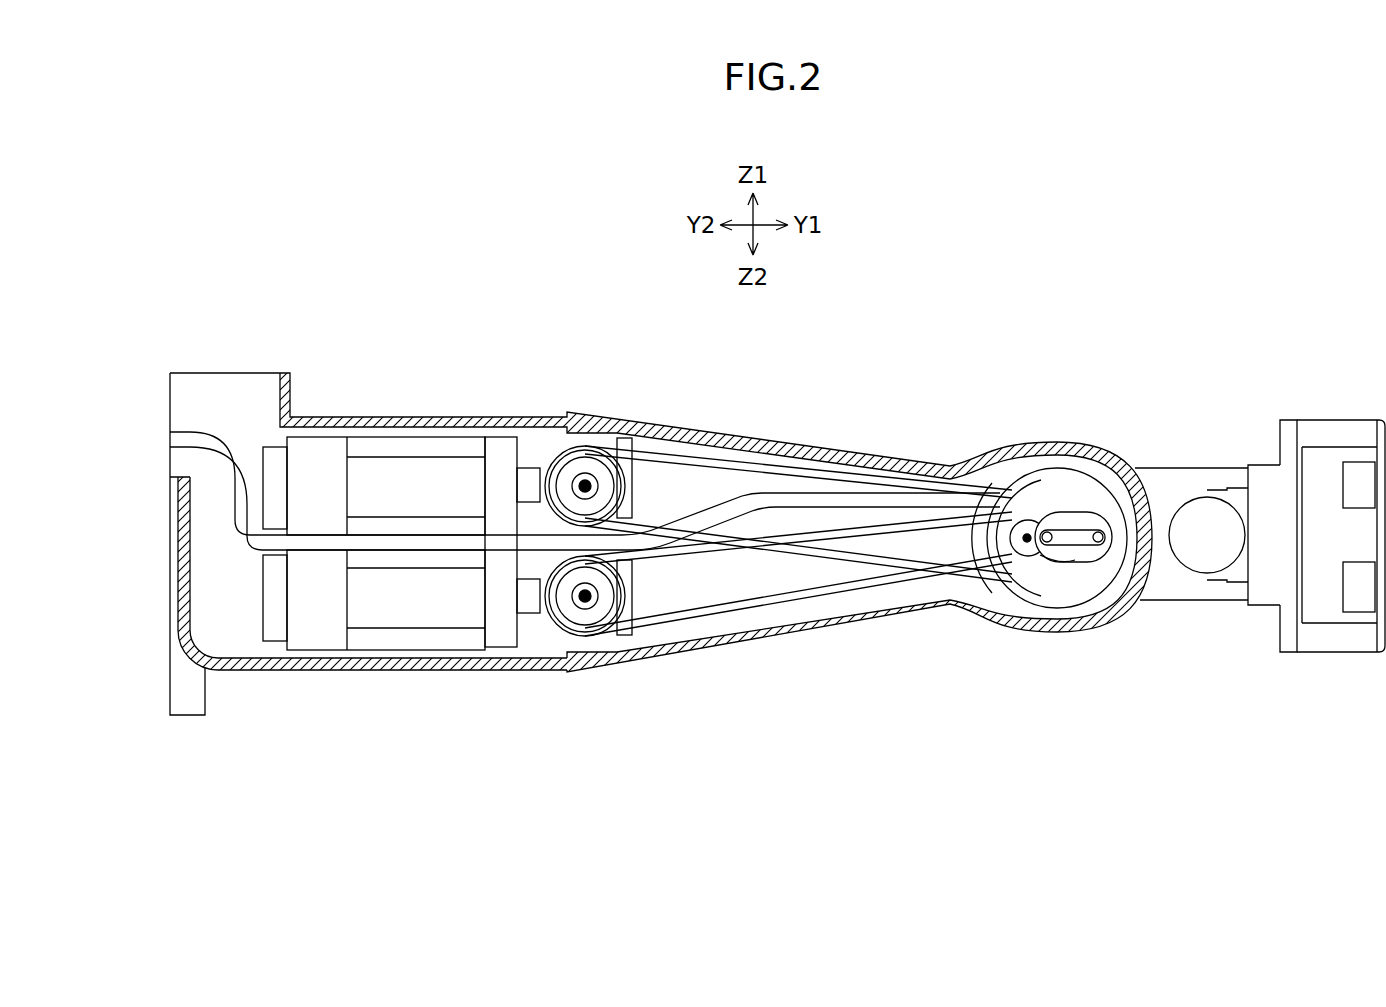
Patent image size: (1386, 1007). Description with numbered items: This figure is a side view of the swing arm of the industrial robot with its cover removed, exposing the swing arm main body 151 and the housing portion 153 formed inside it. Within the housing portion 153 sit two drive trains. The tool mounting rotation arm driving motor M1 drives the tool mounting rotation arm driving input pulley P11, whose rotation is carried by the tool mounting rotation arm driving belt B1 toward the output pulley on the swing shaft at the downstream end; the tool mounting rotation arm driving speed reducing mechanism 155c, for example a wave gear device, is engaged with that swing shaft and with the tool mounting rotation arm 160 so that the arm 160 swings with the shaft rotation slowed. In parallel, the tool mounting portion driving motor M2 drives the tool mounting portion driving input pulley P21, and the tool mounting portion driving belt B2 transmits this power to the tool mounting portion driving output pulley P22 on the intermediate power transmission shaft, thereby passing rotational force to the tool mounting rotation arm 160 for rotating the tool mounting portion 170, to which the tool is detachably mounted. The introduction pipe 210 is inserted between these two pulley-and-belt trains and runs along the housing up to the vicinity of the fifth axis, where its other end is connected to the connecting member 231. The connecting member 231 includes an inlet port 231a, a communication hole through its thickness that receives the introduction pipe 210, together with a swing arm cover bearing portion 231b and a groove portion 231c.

The swing arm main body 151 is at (355, 416).
The housing portion 153 is at (250, 638).
The tool mounting rotation arm driving motor M1 is at (425, 465).
The tool mounting portion driving motor M2 is at (425, 616).
The tool mounting rotation arm driving input pulley P11 is at (585, 470).
The tool mounting portion driving input pulley P21 is at (583, 612).
The tool mounting portion driving output pulley P22 is at (1030, 520).
The tool mounting rotation arm driving belt B1 is at (700, 462).
The tool mounting portion driving belt B2 is at (702, 620).
The introduction pipe 210 is at (778, 494).
The connecting member 231 is at (1062, 557).
The inlet port 231a is at (1100, 530).
The swing arm cover bearing portion 231b is at (1045, 560).
The groove portion 231c is at (1048, 545).
The tool mounting rotation arm driving speed reducing mechanism 155c is at (1143, 600).
The tool mounting rotation arm 160 is at (1200, 480).
The tool mounting portion 170 is at (1330, 432).